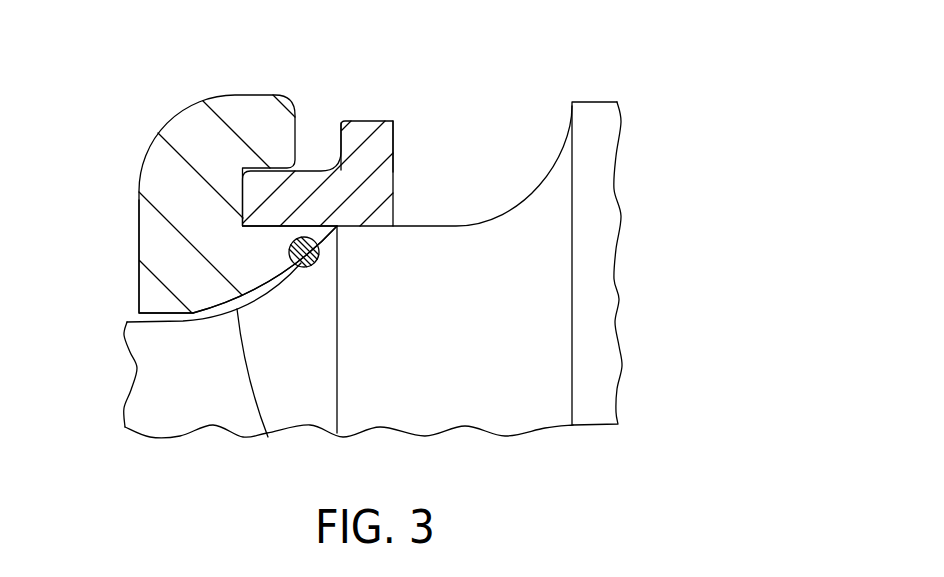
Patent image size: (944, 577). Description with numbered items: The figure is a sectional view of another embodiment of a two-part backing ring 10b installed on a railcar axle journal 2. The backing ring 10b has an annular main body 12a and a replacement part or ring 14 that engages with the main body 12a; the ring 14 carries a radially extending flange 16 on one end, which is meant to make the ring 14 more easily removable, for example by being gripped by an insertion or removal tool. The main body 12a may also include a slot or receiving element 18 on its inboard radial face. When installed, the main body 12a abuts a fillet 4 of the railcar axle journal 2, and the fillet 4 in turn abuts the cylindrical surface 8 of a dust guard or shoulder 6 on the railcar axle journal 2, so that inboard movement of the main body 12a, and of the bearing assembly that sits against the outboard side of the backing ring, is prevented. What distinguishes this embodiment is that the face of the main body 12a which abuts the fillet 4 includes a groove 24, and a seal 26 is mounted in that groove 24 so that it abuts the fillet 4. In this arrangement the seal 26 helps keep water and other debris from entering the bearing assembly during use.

The two-part backing ring 10b is at (84, 59).
The main body 12a is at (176, 137).
The ring 14 is at (295, 175).
The flange 16 is at (354, 127).
The receiving element 18 is at (182, 227).
The cylindrical surface 8 is at (424, 216).
The shoulder 6 is at (537, 314).
The railcar axle journal 2 is at (149, 374).
The fillet 4 is at (260, 429).
The groove 24 is at (295, 254).
The seal 26 is at (311, 243).